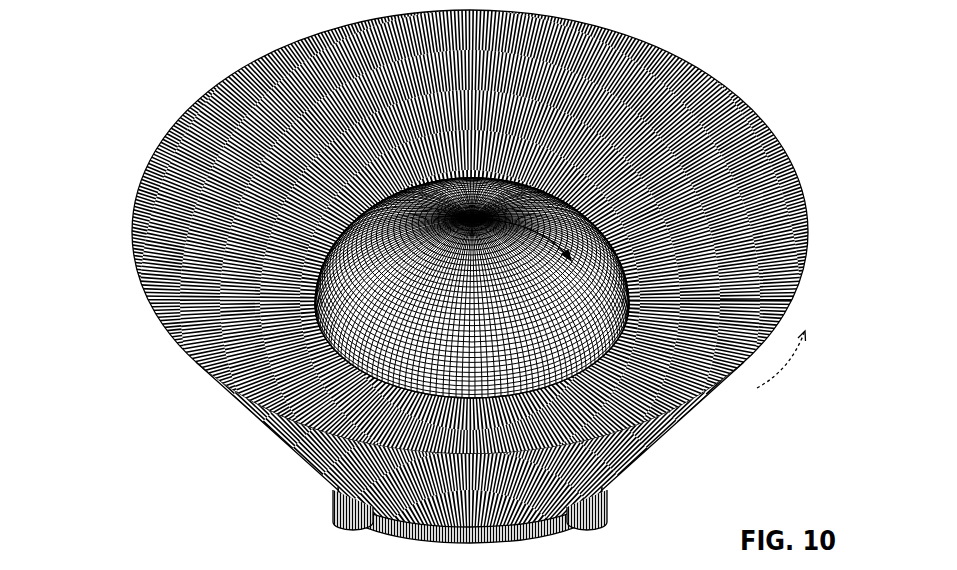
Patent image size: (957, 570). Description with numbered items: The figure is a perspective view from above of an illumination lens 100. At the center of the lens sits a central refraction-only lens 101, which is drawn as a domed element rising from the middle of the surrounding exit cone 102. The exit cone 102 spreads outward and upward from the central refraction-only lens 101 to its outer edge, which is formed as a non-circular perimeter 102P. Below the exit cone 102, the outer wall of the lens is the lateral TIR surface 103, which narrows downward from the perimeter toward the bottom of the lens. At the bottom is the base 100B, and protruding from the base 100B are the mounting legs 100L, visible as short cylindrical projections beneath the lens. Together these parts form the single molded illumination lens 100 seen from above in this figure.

The illumination lens 100 is at (128, 84).
The central refraction-only lens 101 is at (383, 238).
The exit cone 102 is at (672, 127).
The non-circular perimeter 102P is at (817, 212).
The lateral TIR surface 103 is at (287, 431).
The base 100B is at (322, 492).
The mounting legs 100L is at (608, 512).